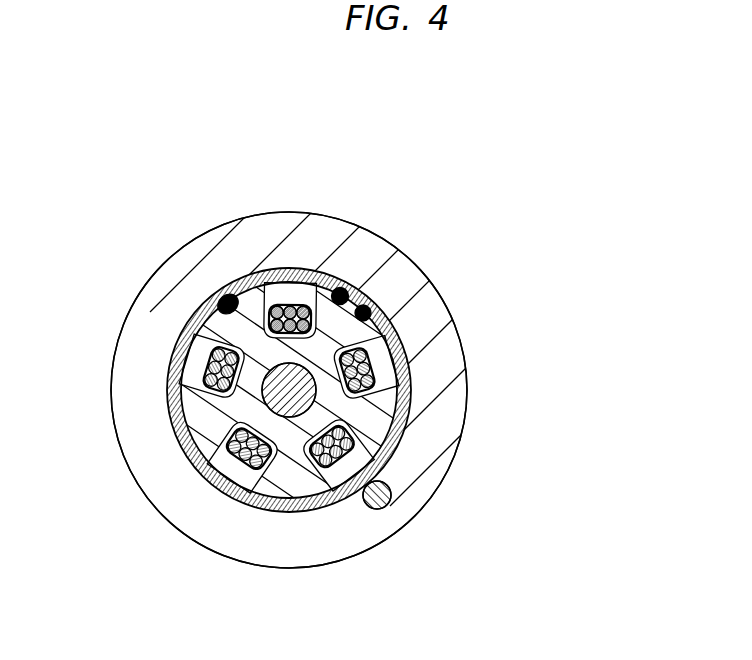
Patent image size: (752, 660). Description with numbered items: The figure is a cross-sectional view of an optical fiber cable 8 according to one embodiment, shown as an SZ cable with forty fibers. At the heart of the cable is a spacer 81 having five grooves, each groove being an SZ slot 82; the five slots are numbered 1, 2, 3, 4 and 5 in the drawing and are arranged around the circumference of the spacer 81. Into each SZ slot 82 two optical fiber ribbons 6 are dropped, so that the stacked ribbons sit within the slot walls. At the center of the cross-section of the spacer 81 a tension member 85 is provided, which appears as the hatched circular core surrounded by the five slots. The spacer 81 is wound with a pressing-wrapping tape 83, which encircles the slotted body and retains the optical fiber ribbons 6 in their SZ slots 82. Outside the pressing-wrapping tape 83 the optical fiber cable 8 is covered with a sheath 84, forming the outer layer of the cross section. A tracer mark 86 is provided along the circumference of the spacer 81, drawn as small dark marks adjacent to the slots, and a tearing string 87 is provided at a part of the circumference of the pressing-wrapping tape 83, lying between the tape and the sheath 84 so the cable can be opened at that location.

The optical fiber cable 8 is at (405, 196).
The spacer 81 is at (410, 412).
The SZ slot 82 is at (288, 388).
The pressing-wrapping tape 83 is at (385, 313).
The sheath 84 is at (397, 290).
The tension member 85 is at (168, 397).
The tracer mark 86 is at (222, 300).
The tearing string 87 is at (391, 487).
The optical fiber ribbon 6 is at (312, 303).
The first unit 1 is at (290, 322).
The second unit 2 is at (358, 367).
The third unit 3 is at (337, 451).
The fourth unit 4 is at (244, 453).
The fifth unit 5 is at (218, 367).